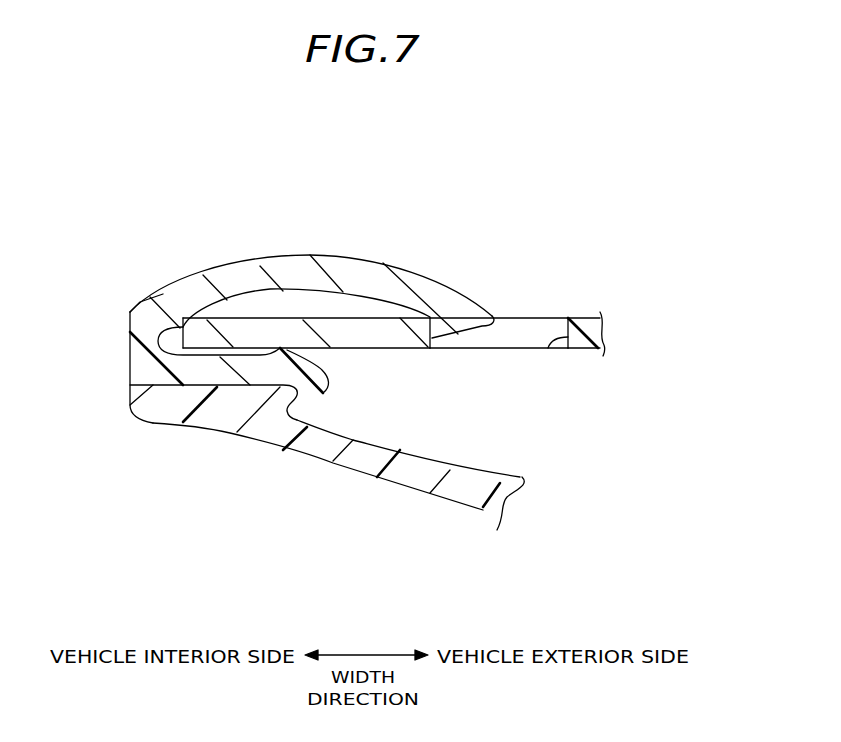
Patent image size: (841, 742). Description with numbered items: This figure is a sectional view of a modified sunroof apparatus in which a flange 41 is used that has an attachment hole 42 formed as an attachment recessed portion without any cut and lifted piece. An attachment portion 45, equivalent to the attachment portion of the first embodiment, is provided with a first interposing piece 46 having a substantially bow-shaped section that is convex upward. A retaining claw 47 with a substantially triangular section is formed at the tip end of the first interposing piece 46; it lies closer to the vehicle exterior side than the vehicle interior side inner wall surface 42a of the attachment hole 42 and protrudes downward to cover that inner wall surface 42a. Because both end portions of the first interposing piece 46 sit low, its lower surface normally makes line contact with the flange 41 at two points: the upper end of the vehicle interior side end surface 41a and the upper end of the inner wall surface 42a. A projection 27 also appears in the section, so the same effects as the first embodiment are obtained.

The projection 27 is at (281, 348).
The flange 41 is at (583, 349).
The vehicle interior side end surface 41a is at (177, 323).
The attachment hole 42 is at (548, 348).
The vehicle interior side inner wall surface 42a is at (435, 349).
The attachment portion 45 is at (128, 315).
The first interposing piece 46 is at (342, 256).
The retaining claw 47 is at (476, 336).